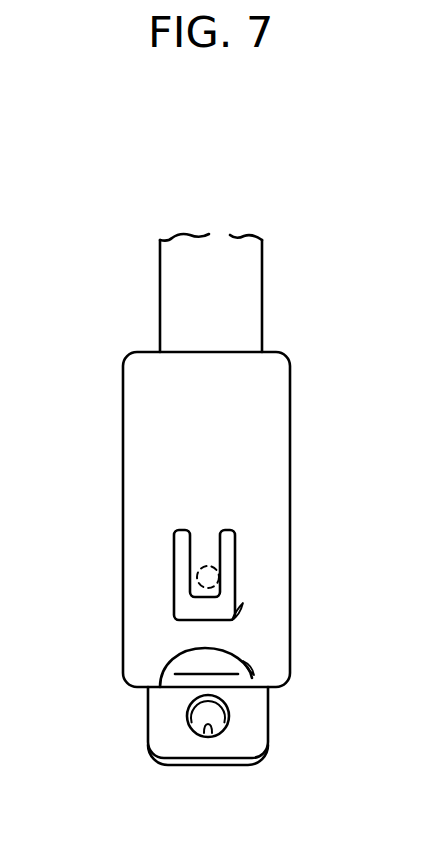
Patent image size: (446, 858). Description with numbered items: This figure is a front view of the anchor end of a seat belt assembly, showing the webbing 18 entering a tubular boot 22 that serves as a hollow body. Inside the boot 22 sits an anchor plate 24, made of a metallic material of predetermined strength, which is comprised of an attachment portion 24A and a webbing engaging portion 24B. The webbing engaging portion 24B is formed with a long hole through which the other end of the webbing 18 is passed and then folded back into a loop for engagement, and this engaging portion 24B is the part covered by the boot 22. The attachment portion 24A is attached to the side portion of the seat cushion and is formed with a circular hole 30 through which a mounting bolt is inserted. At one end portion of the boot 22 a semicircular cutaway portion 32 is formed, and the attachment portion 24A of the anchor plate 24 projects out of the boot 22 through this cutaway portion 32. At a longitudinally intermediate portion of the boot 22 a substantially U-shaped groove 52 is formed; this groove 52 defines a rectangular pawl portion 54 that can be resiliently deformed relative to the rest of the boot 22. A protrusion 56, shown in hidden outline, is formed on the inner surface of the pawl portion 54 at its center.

The webbing 18 is at (250, 285).
The boot 22 is at (273, 427).
The anchor plate 24 is at (270, 733).
The attachment portion 24A is at (163, 730).
The webbing engaging portion 24B is at (185, 663).
The circular hole 30 is at (215, 733).
The semicircular cutaway portion 32 is at (252, 673).
The U-shaped groove 52 is at (245, 603).
The pawl portion 54 is at (217, 553).
The protrusion 56 is at (219, 577).